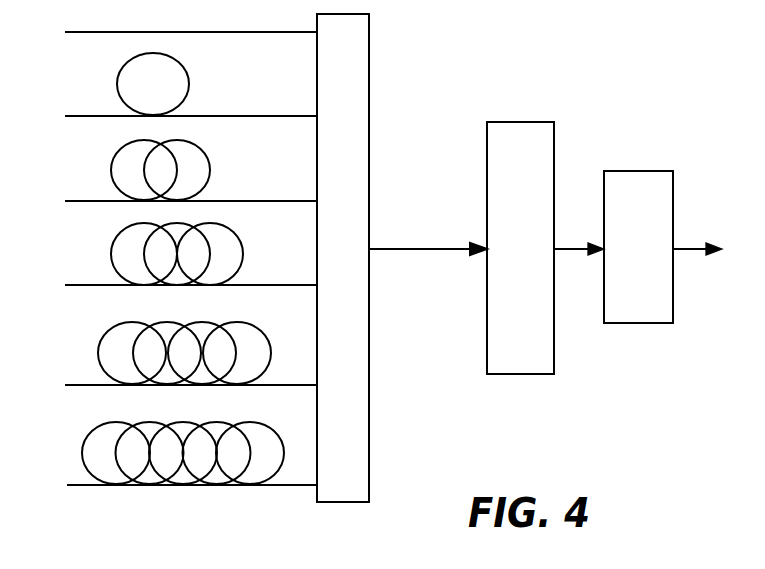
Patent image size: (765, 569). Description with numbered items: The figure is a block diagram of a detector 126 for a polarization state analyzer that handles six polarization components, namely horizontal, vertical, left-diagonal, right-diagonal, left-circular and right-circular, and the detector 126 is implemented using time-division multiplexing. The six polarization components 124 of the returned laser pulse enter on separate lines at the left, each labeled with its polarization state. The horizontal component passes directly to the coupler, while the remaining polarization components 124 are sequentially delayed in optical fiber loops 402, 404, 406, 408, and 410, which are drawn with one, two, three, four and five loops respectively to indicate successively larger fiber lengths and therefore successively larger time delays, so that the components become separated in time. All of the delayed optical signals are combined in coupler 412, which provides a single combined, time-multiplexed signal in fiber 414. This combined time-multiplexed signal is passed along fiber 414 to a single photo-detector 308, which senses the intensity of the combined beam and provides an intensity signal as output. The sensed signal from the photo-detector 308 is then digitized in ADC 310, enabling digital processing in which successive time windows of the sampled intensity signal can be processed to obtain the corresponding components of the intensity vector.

The polarization component beams 124 is at (88, 34).
The intensity detector 126 is at (212, 552).
The optical fiber loop 402 is at (190, 82).
The optical fiber loop 404 is at (210, 155).
The optical fiber loop 406 is at (243, 248).
The optical fiber loop 408 is at (237, 322).
The optical fiber loop 410 is at (260, 421).
The coupler 412 is at (369, 97).
The fiber 414 is at (450, 252).
The photo-detector 308 is at (520, 374).
The analog-to-digital converter 310 is at (640, 323).